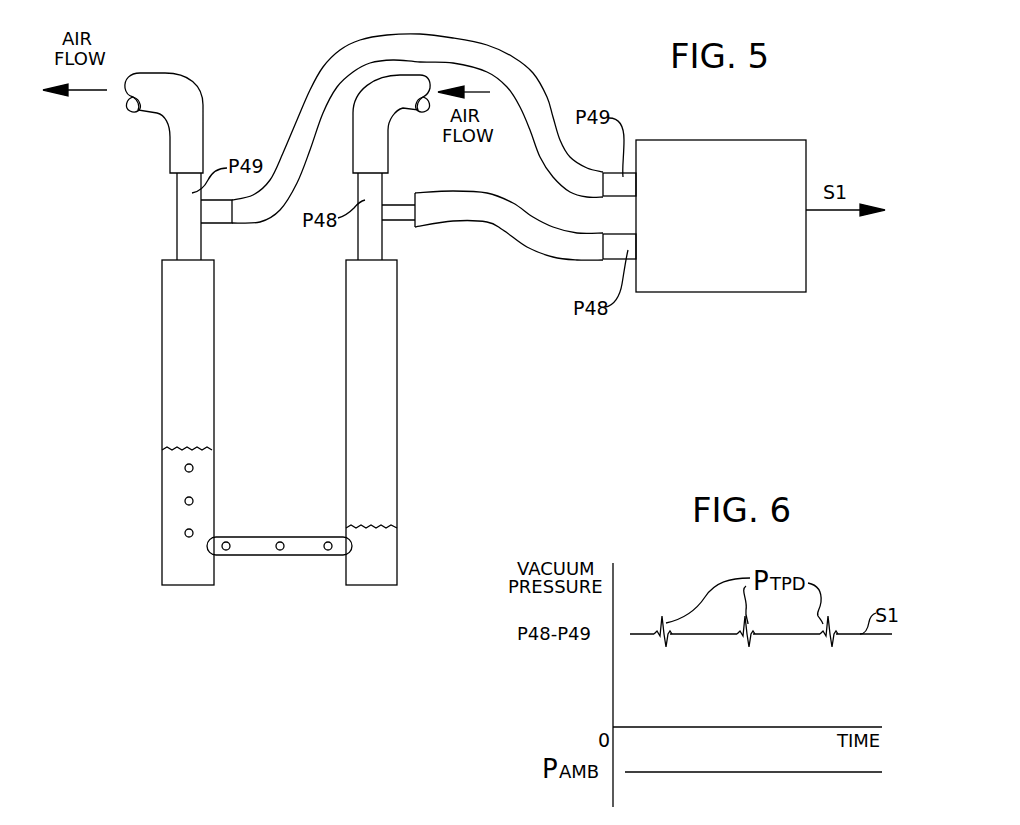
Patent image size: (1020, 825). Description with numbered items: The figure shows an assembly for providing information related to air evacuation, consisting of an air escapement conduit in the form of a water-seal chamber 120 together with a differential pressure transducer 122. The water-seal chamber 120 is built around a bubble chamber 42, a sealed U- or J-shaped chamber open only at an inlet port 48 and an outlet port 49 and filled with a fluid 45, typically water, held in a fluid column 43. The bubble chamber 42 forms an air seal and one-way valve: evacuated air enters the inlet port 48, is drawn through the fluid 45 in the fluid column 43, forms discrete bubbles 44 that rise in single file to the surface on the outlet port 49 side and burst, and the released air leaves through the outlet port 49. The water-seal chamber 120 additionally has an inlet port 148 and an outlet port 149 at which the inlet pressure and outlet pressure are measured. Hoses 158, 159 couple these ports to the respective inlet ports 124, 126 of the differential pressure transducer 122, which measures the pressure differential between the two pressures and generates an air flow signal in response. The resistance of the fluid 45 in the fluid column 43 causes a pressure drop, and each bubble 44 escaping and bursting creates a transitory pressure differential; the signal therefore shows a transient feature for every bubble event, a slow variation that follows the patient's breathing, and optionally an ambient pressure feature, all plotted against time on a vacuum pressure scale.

The water-seal chamber 120 is at (263, 62).
The hose 159 is at (478, 36).
The hose 158 is at (520, 233).
The outlet port 149 is at (218, 222).
The inlet port 148 is at (400, 204).
The outlet port 49 is at (177, 240).
The inlet port 48 is at (381, 243).
The fluid column 43 is at (162, 327).
The bubble chamber 42 is at (397, 488).
The fluid 45 is at (177, 468).
The bubbles 44 is at (181, 501).
The differential pressure transducer 122 is at (710, 138).
The inlet port 124 is at (610, 175).
The inlet port 126 is at (615, 250).